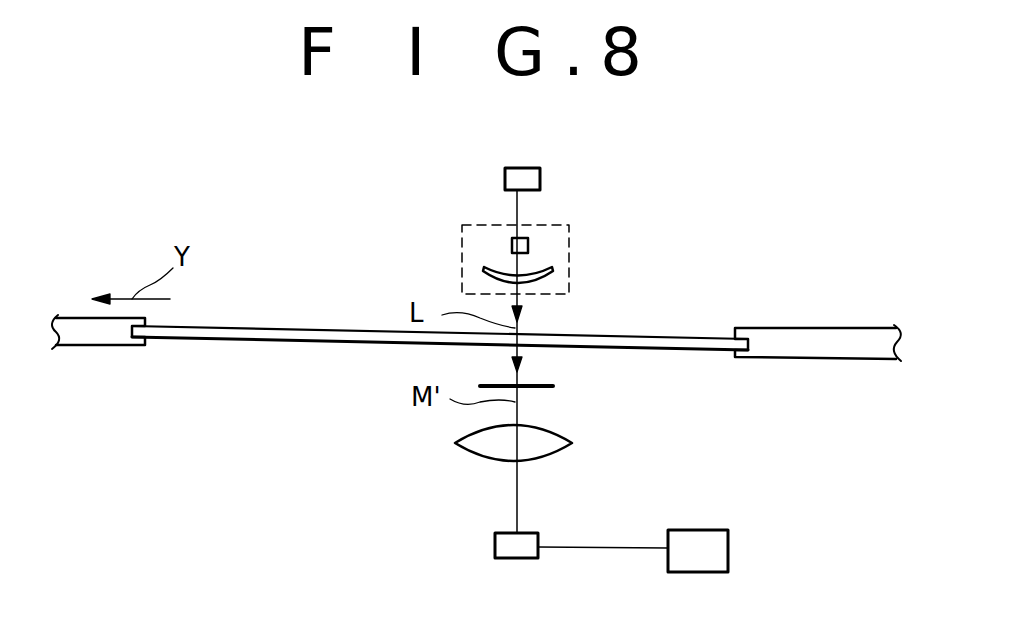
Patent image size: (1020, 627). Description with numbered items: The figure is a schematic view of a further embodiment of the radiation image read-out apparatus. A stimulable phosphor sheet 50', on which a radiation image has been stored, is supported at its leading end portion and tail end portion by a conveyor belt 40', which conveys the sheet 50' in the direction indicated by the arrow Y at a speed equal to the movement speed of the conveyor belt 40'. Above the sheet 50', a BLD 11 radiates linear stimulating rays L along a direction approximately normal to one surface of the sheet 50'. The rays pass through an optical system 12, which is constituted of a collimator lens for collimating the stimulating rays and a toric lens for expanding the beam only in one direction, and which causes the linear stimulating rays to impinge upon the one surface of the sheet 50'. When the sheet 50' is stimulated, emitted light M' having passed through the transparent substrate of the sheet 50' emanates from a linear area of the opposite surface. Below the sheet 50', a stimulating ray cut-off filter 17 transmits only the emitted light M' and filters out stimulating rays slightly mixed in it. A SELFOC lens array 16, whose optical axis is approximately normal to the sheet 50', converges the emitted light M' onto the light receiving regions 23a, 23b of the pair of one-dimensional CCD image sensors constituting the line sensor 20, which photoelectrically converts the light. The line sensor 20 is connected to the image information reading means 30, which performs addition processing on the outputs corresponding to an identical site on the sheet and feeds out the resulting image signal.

The BLD 11 is at (537, 168).
The optical system 12 is at (545, 224).
The stimulable phosphor sheet 50' is at (440, 316).
The conveyor belt 40' is at (100, 360).
The stimulating ray cut-off filter 17 is at (556, 384).
The SELFOC lens array 16 is at (562, 442).
The line sensor 20 is at (484, 549).
The light receiving region 23a is at (534, 536).
The light receiving region 23b is at (608, 519).
The image information reading means 30 is at (698, 551).